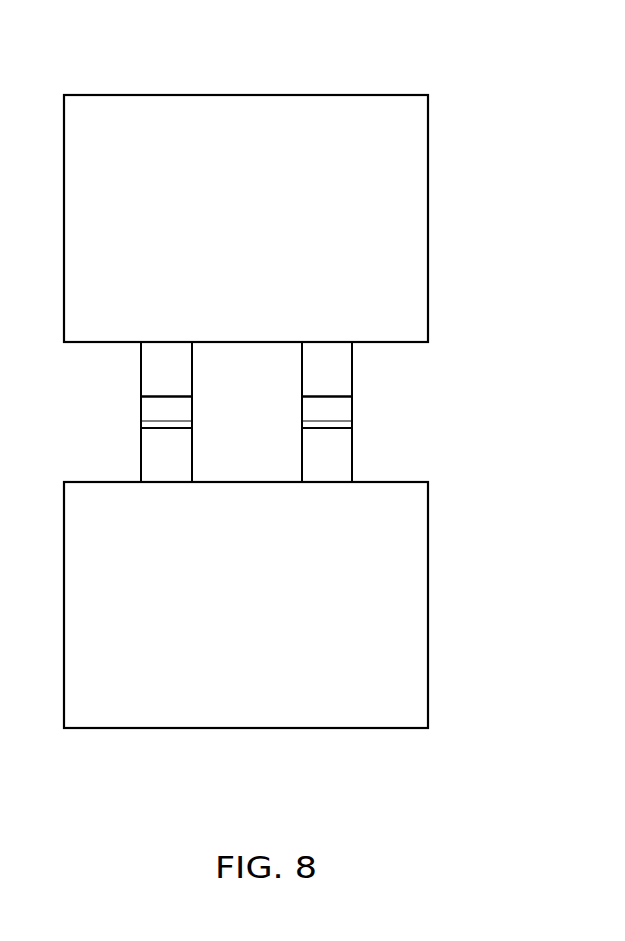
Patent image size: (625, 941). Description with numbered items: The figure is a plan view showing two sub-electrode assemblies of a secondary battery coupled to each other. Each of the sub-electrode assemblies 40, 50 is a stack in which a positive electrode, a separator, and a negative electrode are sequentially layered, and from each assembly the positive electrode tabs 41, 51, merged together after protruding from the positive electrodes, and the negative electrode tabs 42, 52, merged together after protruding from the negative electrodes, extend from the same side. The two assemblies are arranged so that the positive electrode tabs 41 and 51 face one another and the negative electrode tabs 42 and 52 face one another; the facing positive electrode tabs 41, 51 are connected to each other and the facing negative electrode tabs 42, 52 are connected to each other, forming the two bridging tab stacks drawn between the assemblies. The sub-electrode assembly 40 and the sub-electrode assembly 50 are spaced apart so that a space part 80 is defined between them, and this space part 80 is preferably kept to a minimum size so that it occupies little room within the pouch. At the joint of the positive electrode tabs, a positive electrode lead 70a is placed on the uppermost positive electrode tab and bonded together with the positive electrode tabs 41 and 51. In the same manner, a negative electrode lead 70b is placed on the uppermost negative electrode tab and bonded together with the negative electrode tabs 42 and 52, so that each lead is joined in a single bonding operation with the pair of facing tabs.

The sub-electrode assembly 40 is at (418, 221).
The sub-electrode assembly 50 is at (417, 598).
The positive electrode tab 41 is at (148, 369).
The negative electrode tab 42 is at (342, 366).
The positive electrode tab 51 is at (148, 452).
The negative electrode tab 52 is at (342, 452).
The positive electrode lead 70a is at (145, 409).
The negative electrode lead 70b is at (307, 409).
The space part 80 is at (383, 412).